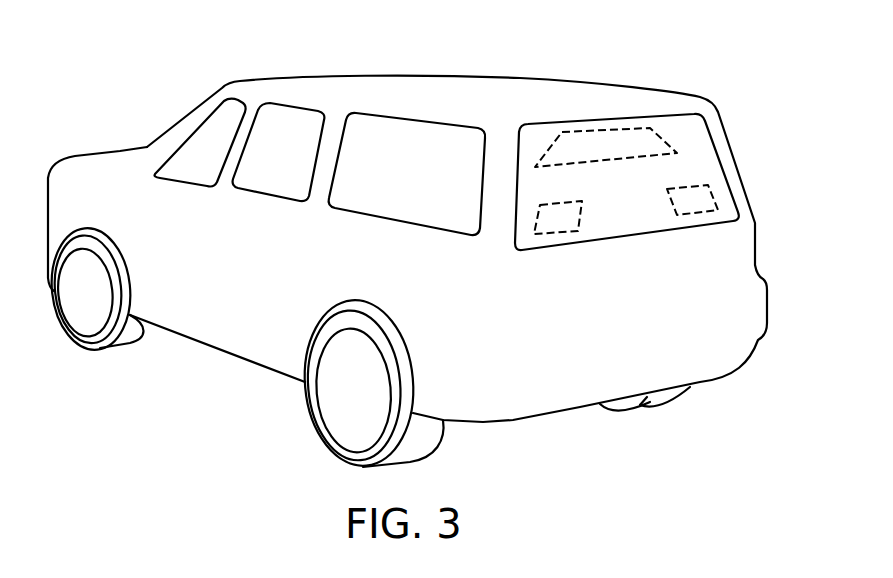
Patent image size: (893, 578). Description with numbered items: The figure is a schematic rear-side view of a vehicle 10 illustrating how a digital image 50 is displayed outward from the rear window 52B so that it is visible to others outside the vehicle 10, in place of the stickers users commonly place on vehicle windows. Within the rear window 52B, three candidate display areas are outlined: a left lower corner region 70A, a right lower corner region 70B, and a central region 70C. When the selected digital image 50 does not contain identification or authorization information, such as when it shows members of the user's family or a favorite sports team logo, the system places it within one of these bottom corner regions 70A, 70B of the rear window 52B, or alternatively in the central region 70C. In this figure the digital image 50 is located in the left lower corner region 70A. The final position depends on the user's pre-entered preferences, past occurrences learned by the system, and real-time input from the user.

The vehicle 10 is at (98, 132).
The digital image 50 is at (621, 252).
The rear window 52B is at (643, 199).
The left lower corner region 70A is at (556, 234).
The right lower corner region 70B is at (703, 216).
The central region 70C is at (606, 130).